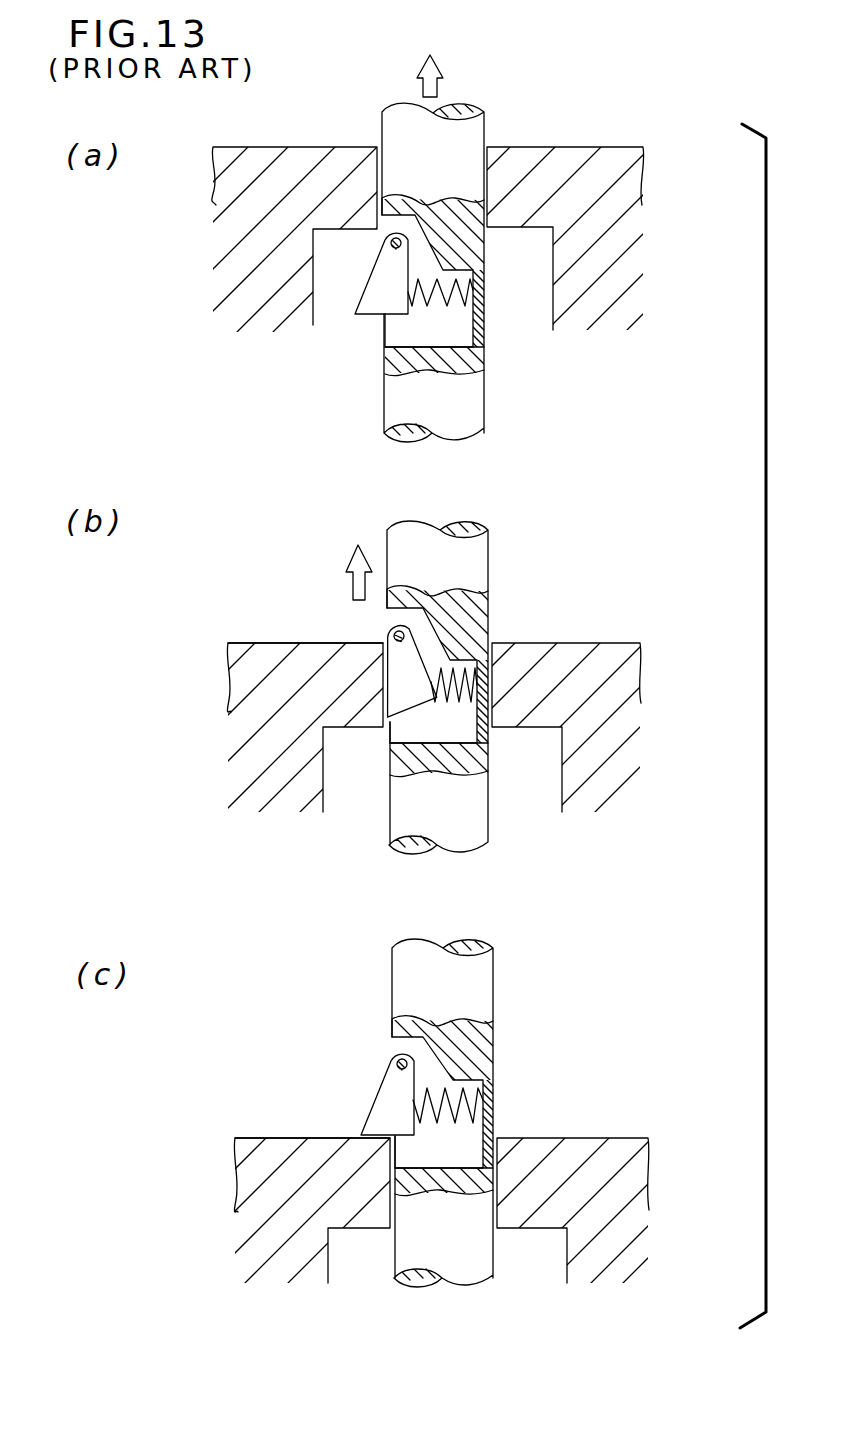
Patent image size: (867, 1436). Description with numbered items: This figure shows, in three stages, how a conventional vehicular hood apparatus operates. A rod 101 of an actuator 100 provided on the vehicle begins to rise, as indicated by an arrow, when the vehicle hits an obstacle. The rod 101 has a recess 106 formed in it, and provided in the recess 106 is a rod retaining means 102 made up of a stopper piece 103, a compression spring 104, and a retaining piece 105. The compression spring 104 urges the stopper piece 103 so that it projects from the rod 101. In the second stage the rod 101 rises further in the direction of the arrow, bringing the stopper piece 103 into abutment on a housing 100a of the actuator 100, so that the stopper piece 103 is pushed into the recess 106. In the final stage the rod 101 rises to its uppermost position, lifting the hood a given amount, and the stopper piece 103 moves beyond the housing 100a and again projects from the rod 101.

The actuator 100 is at (611, 142).
The housing 100a is at (284, 643).
The rod 101 is at (486, 130).
The rod retaining means 102 is at (352, 277).
The stopper piece 103 is at (358, 299).
The compression spring 104 is at (434, 311).
The retaining piece 105 is at (486, 296).
The recess 106 is at (421, 740).